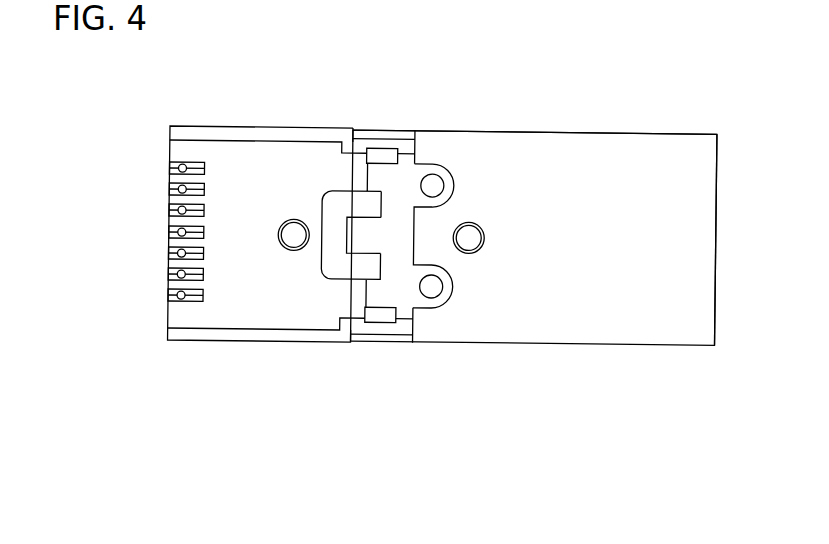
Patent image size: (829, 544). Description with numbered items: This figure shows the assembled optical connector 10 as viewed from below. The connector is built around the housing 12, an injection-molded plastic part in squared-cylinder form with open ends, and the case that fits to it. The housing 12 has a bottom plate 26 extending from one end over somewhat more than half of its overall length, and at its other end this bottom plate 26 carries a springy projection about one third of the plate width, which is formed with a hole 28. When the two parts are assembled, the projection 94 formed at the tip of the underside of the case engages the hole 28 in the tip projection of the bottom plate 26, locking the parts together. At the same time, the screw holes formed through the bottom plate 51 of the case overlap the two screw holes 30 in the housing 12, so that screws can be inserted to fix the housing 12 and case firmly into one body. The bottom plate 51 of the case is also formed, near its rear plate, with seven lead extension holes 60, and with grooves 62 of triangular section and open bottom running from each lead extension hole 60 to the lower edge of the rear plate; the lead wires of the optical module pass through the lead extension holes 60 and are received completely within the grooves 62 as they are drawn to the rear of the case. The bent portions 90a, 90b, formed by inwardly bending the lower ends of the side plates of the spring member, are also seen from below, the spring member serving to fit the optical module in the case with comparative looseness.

The optical connector 10 is at (620, 117).
The housing 12 is at (532, 130).
The bottom plate 26 is at (490, 160).
The hole 28 is at (345, 245).
The screw holes 30 is at (431, 187).
The bottom plate 51 is at (323, 157).
The lead extension holes 60 is at (170, 169).
The grooves 62 is at (183, 170).
The bent portion 90a is at (383, 323).
The bent portion 90b is at (384, 156).
The projection 94 is at (354, 238).